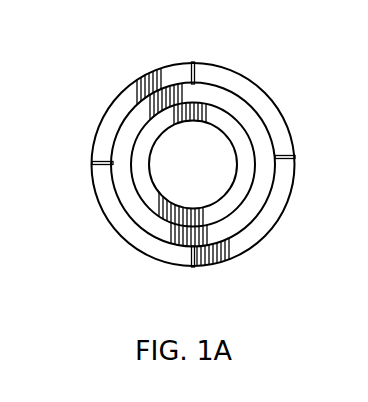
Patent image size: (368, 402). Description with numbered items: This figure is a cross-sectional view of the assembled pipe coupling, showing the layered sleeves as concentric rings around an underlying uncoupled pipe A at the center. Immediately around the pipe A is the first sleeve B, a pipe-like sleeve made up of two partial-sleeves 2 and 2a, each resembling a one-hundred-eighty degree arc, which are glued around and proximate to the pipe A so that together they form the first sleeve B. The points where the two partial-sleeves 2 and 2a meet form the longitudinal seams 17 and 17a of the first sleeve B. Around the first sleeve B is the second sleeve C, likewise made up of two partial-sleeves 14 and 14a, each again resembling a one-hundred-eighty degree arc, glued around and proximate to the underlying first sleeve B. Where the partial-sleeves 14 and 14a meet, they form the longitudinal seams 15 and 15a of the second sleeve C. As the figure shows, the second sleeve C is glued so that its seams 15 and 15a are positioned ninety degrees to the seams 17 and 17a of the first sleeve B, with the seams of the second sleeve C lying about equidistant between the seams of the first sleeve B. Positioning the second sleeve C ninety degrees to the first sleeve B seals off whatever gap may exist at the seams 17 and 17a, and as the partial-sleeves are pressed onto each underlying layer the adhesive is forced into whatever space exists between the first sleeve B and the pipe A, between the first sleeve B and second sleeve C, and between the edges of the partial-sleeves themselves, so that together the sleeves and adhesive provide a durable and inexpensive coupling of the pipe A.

The partial-sleeve 2 is at (254, 202).
The partial-sleeve 2a is at (252, 113).
The partial-sleeve 14 is at (116, 214).
The partial-sleeve 14a is at (233, 78).
The longitudinal seam 15 is at (193, 62).
The longitudinal seam 15a is at (193, 267).
The longitudinal seam 17 is at (281, 157).
The longitudinal seam 17a is at (93, 163).
The pipe A is at (142, 138).
The first sleeve B is at (158, 234).
The second sleeve C is at (257, 241).